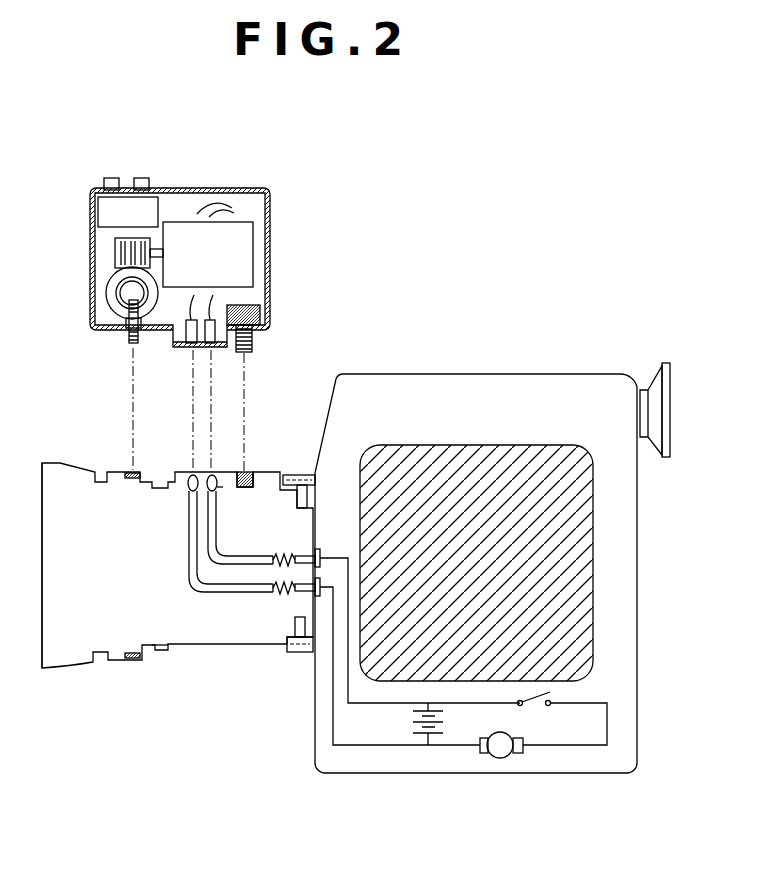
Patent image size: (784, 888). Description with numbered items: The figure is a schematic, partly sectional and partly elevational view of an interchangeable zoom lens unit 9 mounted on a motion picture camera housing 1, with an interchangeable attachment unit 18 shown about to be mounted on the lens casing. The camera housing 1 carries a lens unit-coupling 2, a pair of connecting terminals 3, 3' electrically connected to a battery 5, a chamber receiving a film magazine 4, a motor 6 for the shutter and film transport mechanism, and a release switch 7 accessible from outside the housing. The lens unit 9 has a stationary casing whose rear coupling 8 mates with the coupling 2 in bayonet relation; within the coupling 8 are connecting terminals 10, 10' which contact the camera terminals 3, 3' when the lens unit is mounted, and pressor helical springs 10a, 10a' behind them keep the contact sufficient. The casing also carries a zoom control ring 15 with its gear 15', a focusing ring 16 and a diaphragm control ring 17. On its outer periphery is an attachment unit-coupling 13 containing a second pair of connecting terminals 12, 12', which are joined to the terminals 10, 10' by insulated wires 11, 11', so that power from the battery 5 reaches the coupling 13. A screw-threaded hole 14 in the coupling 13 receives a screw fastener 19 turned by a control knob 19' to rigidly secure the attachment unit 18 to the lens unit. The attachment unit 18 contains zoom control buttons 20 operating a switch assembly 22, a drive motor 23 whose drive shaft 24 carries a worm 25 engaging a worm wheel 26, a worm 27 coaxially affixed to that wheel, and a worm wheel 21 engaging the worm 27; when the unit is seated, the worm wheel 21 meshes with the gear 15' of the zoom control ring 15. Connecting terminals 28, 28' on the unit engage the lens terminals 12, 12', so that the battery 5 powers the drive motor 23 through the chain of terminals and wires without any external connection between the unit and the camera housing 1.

The motion picture camera housing 1 is at (370, 382).
The lens unit-coupling 2 is at (298, 476).
The connecting terminal 3 is at (417, 604).
The connecting terminal 3' is at (397, 635).
The film magazine 4 is at (462, 465).
The battery 5 is at (413, 725).
The motor 6 is at (500, 758).
The release switch 7 is at (548, 695).
The coupling 8 is at (306, 625).
The interchangeable zoom lens unit 9 is at (158, 622).
The connecting terminal 10 is at (290, 534).
The connecting terminal 10' is at (285, 615).
The pressor helical spring 10a is at (261, 548).
The pressor helical spring 10a' is at (251, 604).
The insulated wire 11 is at (213, 527).
The insulated wire 11' is at (211, 541).
The connecting terminal 12 is at (226, 500).
The connecting terminal 12' is at (184, 454).
The attachment unit-coupling 13 is at (264, 480).
The screw-threaded hole 14 is at (243, 472).
The zoom control ring 15 is at (375, 525).
The gear 15' is at (124, 688).
The focusing ring 16 is at (62, 664).
The diaphragm control ring 17 is at (157, 650).
The interchangeable attachment unit 18 is at (250, 188).
The screw fastener 19 is at (270, 345).
The control knob 19' is at (271, 301).
The zoom control buttons 20 is at (145, 178).
The worm wheel 21 is at (130, 345).
The switch assembly 22 is at (118, 213).
The drive motor 23 is at (243, 248).
The drive shaft 24 is at (158, 250).
The worm 25 is at (118, 253).
The worm wheel 26 is at (110, 288).
The worm 27 is at (130, 292).
The connecting terminal 28 is at (221, 383).
The connecting terminal 28' is at (181, 383).